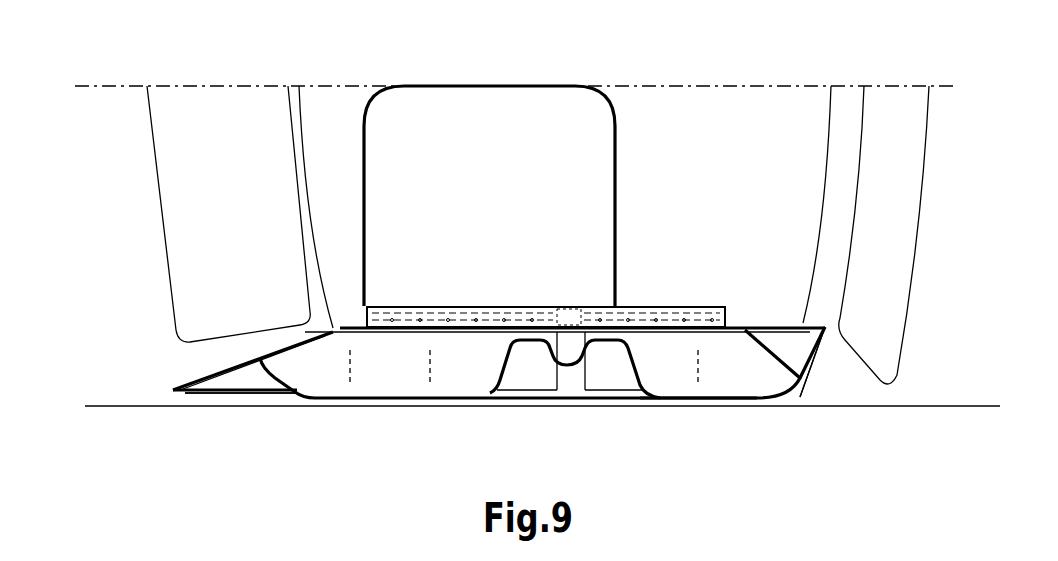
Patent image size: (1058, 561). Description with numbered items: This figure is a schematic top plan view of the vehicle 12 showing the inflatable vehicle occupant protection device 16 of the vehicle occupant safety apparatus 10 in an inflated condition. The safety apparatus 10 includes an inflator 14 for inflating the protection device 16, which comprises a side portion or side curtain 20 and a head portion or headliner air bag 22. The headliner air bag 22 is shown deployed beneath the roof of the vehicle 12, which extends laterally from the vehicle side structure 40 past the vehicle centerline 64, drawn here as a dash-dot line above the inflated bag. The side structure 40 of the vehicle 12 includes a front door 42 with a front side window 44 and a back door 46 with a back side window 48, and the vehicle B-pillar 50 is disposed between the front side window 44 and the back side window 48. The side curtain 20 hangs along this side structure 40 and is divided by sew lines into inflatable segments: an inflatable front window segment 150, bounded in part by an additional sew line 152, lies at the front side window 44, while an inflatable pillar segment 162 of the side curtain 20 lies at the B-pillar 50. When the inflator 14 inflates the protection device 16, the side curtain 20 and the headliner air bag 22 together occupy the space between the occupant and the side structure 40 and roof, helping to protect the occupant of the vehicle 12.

The vehicle occupant safety apparatus 10 is at (482, 259).
The vehicle 12 is at (146, 311).
The inflator 14 is at (645, 318).
The inflatable vehicle occupant protection device 16 is at (345, 297).
The side curtain 20 is at (758, 303).
The headliner air bag 22 is at (622, 180).
The side structure 40 is at (228, 413).
The front door 42 is at (267, 407).
The front side window 44 is at (240, 383).
The back door 46 is at (655, 405).
The back side window 48 is at (817, 385).
The B-pillar 50 is at (567, 378).
The vehicle centerline 64 is at (652, 87).
The inflatable front window segment 150 is at (388, 373).
The sew line 152 is at (728, 378).
The inflatable pillar segment 162 is at (550, 360).